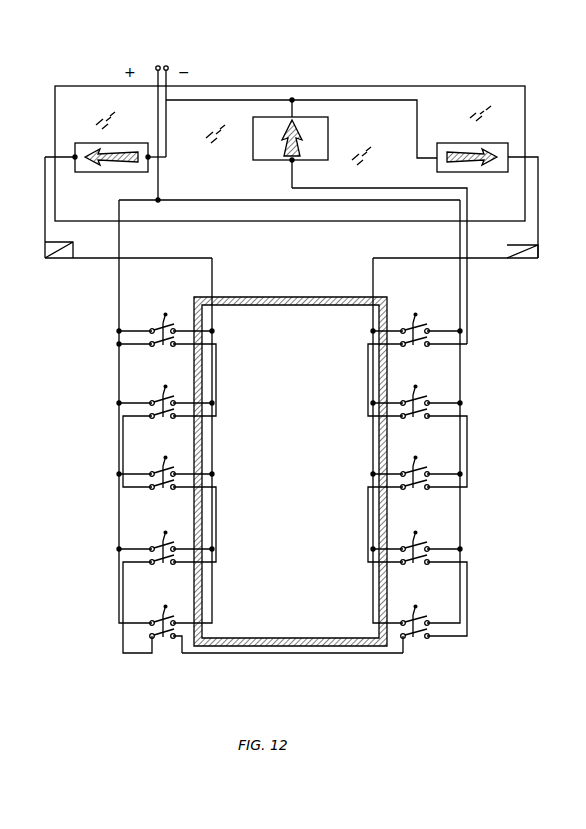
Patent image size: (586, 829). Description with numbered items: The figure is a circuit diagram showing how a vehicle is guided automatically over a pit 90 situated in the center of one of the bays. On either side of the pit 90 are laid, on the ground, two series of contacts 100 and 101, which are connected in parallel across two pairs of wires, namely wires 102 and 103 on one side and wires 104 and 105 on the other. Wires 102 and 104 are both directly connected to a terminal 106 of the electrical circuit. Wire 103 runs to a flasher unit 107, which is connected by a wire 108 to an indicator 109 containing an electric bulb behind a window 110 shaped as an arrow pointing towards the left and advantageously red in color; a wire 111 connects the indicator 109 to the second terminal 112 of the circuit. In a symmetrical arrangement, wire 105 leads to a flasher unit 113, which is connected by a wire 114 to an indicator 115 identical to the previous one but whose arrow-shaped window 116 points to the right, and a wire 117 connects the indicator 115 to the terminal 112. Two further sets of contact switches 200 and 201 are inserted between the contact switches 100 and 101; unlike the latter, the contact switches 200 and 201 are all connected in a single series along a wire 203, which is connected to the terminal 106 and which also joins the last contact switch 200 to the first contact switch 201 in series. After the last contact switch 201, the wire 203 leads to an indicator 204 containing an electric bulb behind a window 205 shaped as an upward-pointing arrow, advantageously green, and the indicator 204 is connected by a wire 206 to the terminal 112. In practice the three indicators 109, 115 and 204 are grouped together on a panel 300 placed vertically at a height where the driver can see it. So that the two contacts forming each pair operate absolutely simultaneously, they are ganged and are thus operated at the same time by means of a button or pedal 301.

The pit 90 is at (252, 624).
The contacts 100 is at (150, 327).
The contacts 101 is at (432, 320).
The wire 102 is at (118, 512).
The wire 103 is at (205, 443).
The wire 104 is at (463, 383).
The wire 105 is at (372, 448).
The terminal 106 is at (156, 67).
The flasher unit 107 is at (65, 259).
The wire 108 is at (46, 234).
The indicator 109 is at (87, 168).
The window 110 is at (121, 151).
The wire 111 is at (168, 127).
The second terminal 112 is at (168, 67).
The flasher unit 113 is at (527, 259).
The wire 114 is at (538, 192).
The indicator 115 is at (497, 169).
The current direction arrow 116 is at (456, 162).
The wire 117 is at (417, 126).
The contact switches 200 is at (150, 350).
The contact switches 201 is at (422, 352).
The wire 203 is at (122, 270).
The indicator 204 is at (322, 147).
The window 205 is at (294, 118).
The wire 206 is at (232, 99).
The panel 300 is at (468, 106).
The button (or pedal) 301 is at (166, 314).